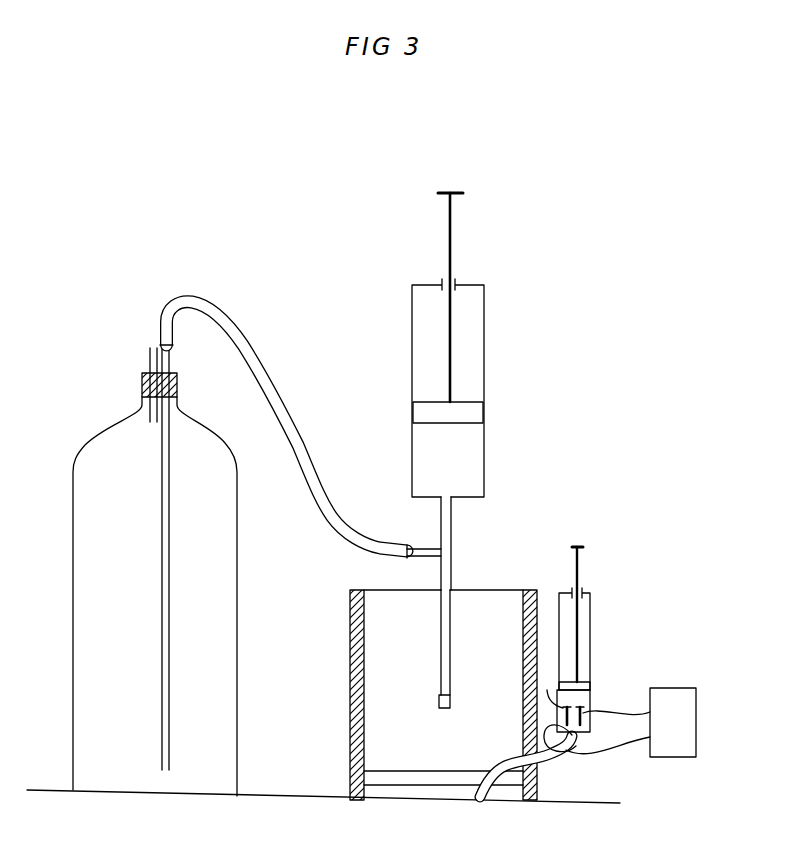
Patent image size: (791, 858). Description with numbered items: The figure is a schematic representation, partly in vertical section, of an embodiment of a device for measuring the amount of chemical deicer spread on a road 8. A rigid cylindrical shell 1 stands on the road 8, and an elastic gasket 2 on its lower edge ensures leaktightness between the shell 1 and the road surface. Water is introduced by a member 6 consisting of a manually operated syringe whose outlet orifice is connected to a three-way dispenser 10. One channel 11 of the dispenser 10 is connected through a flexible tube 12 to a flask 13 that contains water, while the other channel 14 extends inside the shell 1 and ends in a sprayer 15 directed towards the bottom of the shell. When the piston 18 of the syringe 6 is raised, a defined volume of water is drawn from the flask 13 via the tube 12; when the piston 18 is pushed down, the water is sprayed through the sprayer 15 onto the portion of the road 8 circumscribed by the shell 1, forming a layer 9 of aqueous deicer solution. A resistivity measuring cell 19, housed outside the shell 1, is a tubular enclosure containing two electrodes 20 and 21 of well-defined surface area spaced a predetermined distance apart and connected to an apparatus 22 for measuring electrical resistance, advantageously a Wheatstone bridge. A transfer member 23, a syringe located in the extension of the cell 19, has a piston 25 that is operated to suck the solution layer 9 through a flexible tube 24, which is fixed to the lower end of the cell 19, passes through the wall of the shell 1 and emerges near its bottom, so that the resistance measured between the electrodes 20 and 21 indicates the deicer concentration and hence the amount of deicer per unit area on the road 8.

The rigid cylindrical shell 1 is at (350, 731).
The elastic gasket 2 is at (350, 788).
The member for introducing water 6 is at (485, 352).
The road 8 is at (273, 797).
The layer of aqueous solution 9 is at (410, 771).
The three-way dispenser 10 is at (453, 548).
The channel 11 is at (418, 547).
The flexible tube 12 is at (305, 446).
The flask 13 is at (73, 595).
The channel 14 is at (450, 612).
The sprayer 15 is at (439, 699).
The piston 18 is at (473, 415).
The cell for measuring resistivity 19 is at (593, 700).
The electrode 20 is at (583, 723).
The electrode 21 is at (554, 706).
The apparatus for measuring electrical resistance 22 is at (631, 722).
The transfer member 23 is at (595, 597).
The flexible tube 24 is at (500, 762).
The piston 25 is at (583, 681).